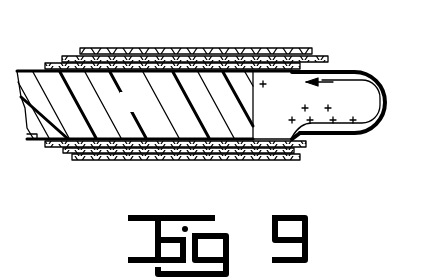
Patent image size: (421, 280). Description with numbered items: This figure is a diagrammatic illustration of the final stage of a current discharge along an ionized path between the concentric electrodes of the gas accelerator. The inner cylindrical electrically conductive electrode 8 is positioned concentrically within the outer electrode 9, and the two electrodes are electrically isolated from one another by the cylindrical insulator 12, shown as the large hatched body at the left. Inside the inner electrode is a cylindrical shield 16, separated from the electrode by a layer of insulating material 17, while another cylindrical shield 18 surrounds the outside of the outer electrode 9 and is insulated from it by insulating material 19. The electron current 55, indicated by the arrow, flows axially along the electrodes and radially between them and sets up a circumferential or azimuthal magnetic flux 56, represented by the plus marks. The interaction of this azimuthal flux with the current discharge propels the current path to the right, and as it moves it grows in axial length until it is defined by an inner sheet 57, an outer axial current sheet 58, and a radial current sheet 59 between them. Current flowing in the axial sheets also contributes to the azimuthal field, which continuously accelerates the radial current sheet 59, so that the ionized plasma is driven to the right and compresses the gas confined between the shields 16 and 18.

The cylindrical insulator 12 is at (147, 111).
The cylindrical shield 18 is at (207, 52).
The insulating material 19 is at (304, 58).
The outer electrode 9 is at (268, 70).
The cylindrical shield 16 is at (294, 149).
The inner cylindrical electrically conductive electrode 8 is at (258, 138).
The layer of insulating material 17 is at (262, 158).
The outer axial current sheet 58 is at (337, 70).
The inner sheet 57 is at (312, 135).
The radial current sheet 59 is at (379, 95).
The electron current 55 is at (334, 81).
The azimuthal magnetic flux 56 is at (264, 87).